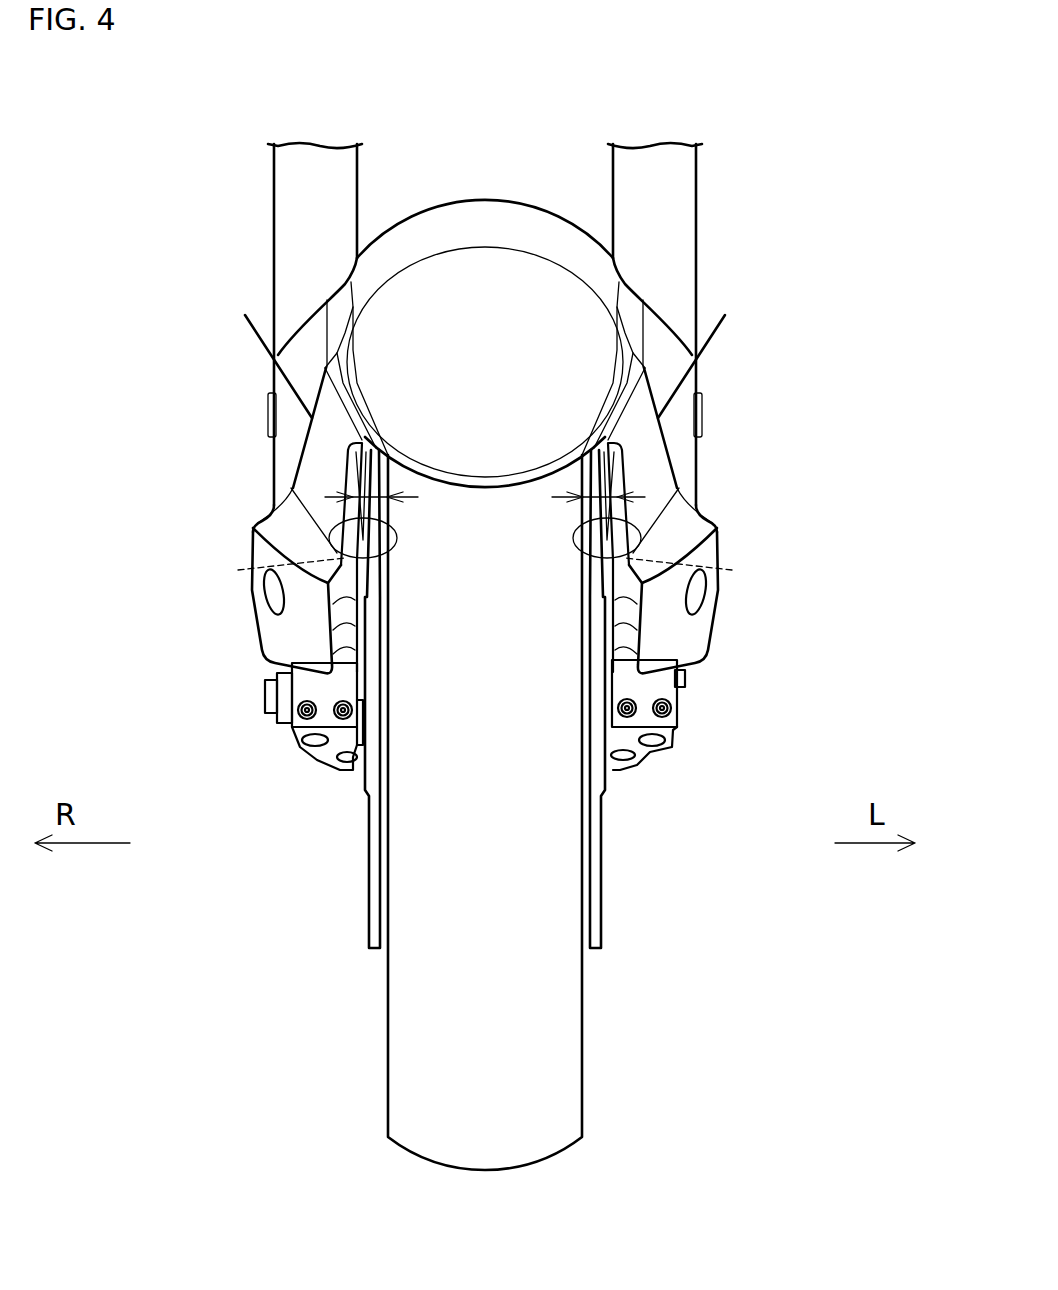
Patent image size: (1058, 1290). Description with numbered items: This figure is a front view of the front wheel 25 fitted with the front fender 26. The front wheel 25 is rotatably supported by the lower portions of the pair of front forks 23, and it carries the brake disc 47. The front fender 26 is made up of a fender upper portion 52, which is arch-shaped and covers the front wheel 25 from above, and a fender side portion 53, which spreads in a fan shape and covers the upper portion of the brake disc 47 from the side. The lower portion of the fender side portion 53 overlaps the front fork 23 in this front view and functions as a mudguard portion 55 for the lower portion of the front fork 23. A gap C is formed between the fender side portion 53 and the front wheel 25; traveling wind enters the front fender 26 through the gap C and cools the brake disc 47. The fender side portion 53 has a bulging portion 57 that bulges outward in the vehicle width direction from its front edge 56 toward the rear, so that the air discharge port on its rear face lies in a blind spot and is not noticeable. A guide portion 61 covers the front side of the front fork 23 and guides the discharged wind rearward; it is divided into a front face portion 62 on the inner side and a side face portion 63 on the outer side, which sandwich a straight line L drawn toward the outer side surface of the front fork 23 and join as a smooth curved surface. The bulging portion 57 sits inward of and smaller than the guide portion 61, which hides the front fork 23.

The front fork 23 is at (296, 160).
The front wheel 25 is at (598, 1027).
The front fender 26 is at (520, 307).
The brake disc 47 is at (368, 850).
The fender upper portion 52 is at (470, 212).
The fender side portion 53 is at (320, 490).
The mudguard portion 55 is at (300, 640).
The front edge 56 is at (378, 560).
The bulging portion 57 is at (313, 457).
The guide portion 61 is at (300, 330).
The front face portion 62 is at (318, 330).
The side face portion 63 is at (300, 412).
The gap C is at (398, 457).
The straight line L is at (285, 352).